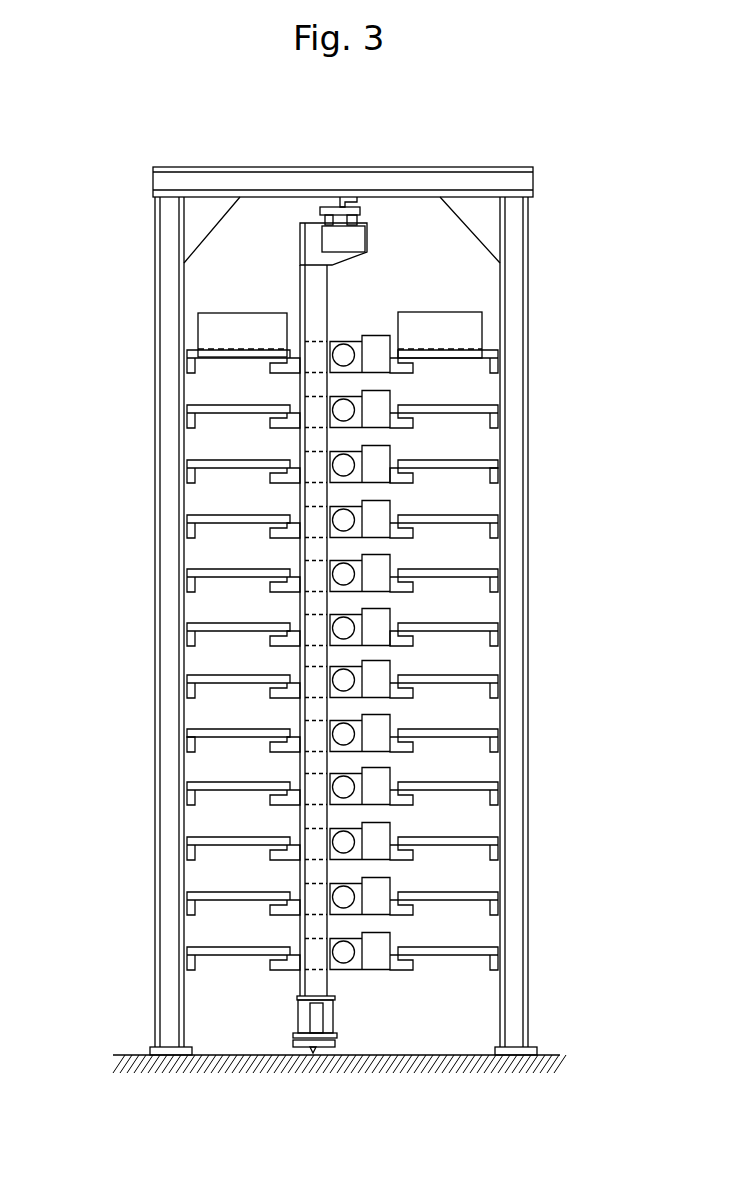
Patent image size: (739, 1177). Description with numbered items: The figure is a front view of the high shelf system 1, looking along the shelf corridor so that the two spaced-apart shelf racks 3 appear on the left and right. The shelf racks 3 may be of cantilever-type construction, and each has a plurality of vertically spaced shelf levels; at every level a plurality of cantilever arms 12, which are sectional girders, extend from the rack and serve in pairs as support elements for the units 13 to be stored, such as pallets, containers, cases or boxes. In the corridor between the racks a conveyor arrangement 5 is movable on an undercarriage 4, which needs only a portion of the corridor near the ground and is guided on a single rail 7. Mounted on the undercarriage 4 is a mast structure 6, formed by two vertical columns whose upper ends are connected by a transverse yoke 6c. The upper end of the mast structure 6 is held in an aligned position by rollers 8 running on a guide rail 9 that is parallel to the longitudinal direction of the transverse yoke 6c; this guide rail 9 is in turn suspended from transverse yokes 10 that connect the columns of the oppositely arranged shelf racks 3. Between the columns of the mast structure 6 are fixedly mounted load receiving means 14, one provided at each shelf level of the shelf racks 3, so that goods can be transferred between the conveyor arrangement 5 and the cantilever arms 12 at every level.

The high shelf system 1 is at (560, 181).
The shelf racks 3 is at (517, 352).
The undercarriage 4 is at (297, 1014).
The conveyor arrangement 5 is at (335, 1023).
The mast structure 6 is at (318, 318).
The transverse yoke 6c is at (366, 238).
The rail 7 is at (313, 1055).
The rollers 8 is at (327, 207).
The guide rail 9 is at (340, 200).
The transverse yokes 10 is at (427, 180).
The cantilever arms 12 is at (460, 460).
The units to be stored 13 is at (258, 320).
The load receiving means 14 is at (420, 480).